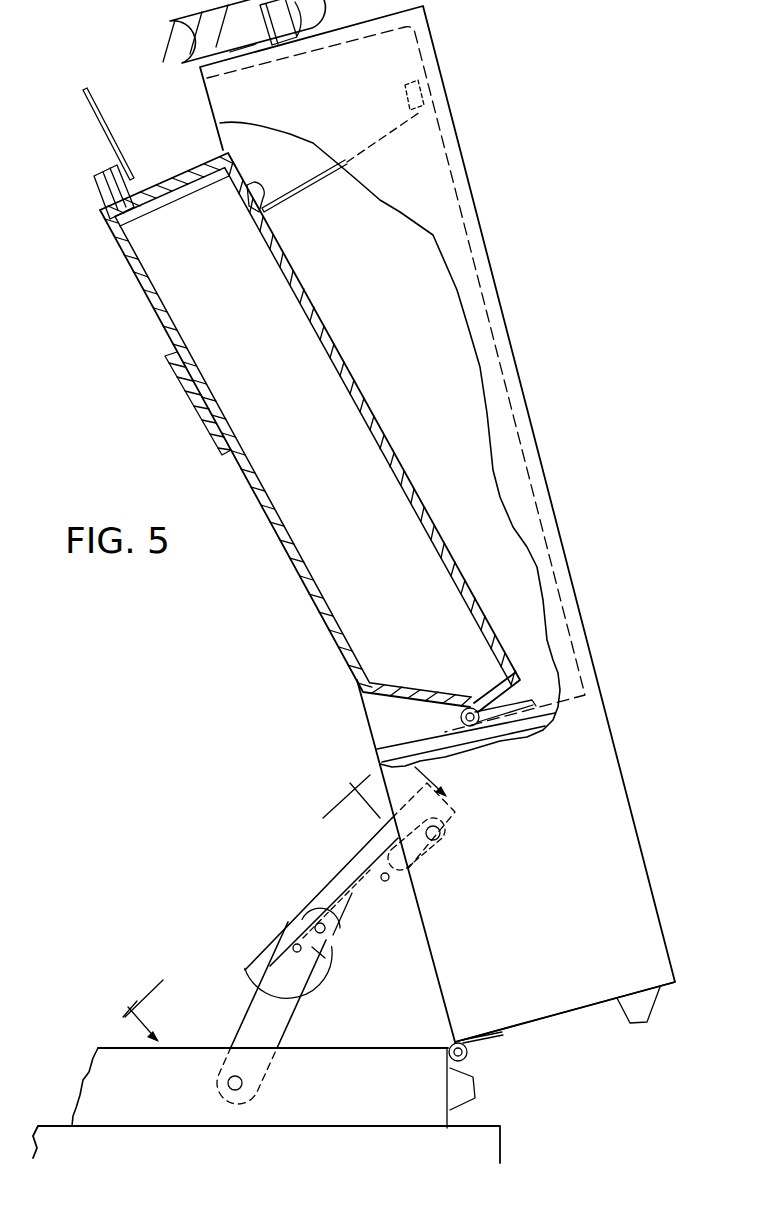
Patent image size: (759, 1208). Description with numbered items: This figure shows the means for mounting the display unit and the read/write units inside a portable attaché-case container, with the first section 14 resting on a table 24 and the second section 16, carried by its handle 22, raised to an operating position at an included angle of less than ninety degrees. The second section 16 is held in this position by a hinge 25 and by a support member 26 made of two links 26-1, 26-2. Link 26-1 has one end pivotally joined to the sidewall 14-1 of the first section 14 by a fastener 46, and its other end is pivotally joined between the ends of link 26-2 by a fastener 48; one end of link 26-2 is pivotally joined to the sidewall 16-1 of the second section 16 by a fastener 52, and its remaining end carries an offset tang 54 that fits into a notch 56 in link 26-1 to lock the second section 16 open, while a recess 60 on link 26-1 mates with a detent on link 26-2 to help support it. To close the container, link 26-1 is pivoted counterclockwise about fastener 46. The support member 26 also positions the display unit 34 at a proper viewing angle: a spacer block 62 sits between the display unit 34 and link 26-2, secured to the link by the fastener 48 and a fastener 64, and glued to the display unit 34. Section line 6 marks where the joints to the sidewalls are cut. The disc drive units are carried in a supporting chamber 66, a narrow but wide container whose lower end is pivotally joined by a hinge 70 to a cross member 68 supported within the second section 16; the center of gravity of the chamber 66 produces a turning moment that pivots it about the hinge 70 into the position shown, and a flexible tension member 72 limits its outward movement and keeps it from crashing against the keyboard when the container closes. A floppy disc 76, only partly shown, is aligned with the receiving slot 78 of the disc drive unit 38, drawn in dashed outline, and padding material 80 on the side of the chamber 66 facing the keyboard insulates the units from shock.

The section line 6— 6 is at (291, 905).
The first section 14 is at (420, 1112).
The sidewall 14-1 is at (350, 1060).
The second section 16 is at (605, 818).
The sidewall 16-1 is at (580, 952).
The handle 22 is at (157, 46).
The table 24 is at (488, 1147).
The hinge 25 is at (495, 1040).
The support member 26 is at (343, 903).
The link 26-1 is at (258, 1017).
The link 26-2 is at (365, 893).
The display unit 34 is at (377, 840).
The disc drive unit 38 is at (112, 172).
The fastener 46 is at (228, 1084).
The fastener 48 is at (316, 927).
The fastener 52 is at (443, 835).
The tang 54 is at (294, 948).
The notch 56 is at (280, 982).
The recess 60 is at (318, 952).
The spacer block 62 is at (355, 866).
The fastener 64 is at (390, 878).
The supporting chamber 66 is at (330, 630).
The cross member 68 is at (405, 742).
The hinge 70 is at (523, 705).
The flexible tension member 72 is at (305, 185).
The floppy disc 76 is at (107, 115).
The receiving slot 78 is at (140, 207).
The padding material 80 is at (195, 407).